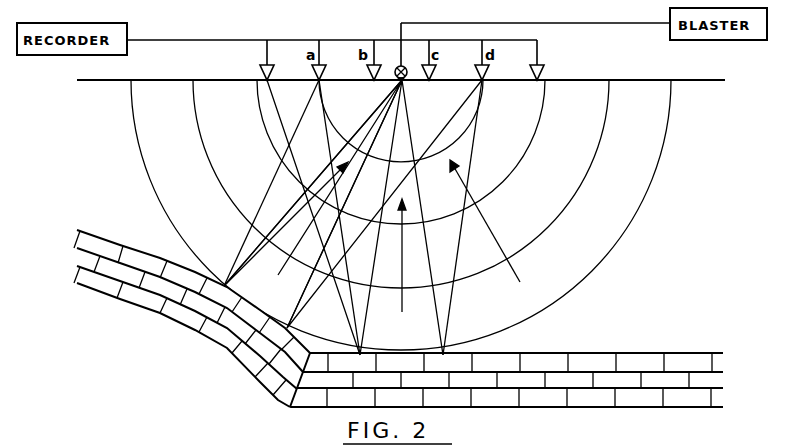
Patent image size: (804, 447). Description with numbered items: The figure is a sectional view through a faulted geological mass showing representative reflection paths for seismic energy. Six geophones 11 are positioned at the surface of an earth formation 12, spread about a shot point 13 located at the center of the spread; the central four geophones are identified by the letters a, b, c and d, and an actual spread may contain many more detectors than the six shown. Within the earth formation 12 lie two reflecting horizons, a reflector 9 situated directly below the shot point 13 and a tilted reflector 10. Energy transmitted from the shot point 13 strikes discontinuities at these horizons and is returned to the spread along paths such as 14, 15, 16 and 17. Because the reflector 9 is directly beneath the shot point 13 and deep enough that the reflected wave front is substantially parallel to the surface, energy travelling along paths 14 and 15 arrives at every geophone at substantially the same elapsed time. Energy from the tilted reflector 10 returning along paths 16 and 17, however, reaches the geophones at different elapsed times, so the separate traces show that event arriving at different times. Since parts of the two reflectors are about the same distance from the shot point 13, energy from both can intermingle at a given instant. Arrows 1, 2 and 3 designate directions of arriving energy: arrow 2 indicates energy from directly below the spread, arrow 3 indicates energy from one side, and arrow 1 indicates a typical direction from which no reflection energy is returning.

The arrow 1 is at (489, 227).
The arrow 2 is at (400, 265).
The arrow 3 is at (313, 186).
The reflector 9 is at (398, 353).
The tilted reflector 10 is at (260, 312).
The geophones 11 is at (258, 74).
The earth formation 12 is at (559, 188).
The shot point 13 is at (400, 66).
The reflection path 14 is at (458, 247).
The reflection path 15 is at (328, 143).
The reflection path 16 is at (307, 303).
The reflection path 17 is at (270, 184).